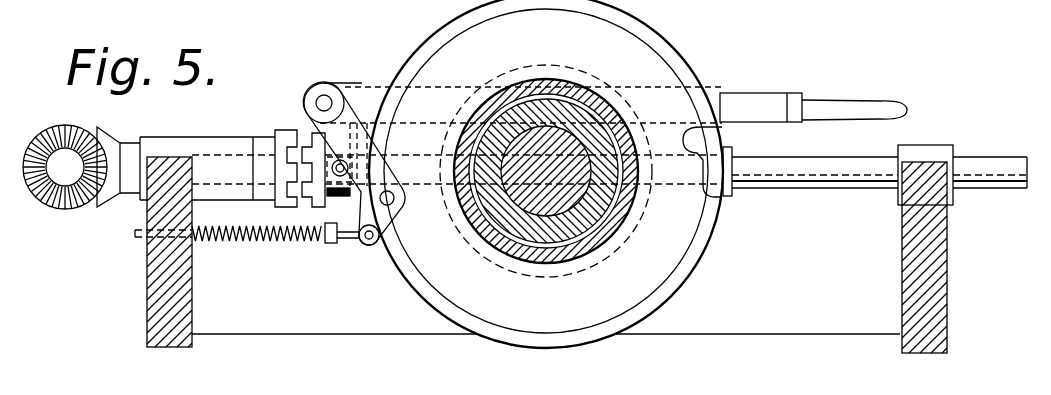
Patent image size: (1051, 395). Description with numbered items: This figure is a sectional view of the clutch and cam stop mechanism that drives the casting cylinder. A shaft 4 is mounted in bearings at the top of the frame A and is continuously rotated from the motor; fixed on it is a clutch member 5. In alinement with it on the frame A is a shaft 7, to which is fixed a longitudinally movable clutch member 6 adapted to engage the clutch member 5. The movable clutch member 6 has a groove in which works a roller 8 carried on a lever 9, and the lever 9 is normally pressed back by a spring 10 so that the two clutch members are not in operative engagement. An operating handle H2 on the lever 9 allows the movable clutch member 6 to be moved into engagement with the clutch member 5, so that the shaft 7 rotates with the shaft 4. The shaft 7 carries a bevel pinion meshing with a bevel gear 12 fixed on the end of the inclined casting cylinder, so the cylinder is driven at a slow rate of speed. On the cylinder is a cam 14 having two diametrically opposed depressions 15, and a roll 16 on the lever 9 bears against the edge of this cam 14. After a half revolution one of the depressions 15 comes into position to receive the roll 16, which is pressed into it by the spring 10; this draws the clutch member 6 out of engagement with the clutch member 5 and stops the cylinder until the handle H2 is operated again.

The shaft 4 is at (210, 152).
The clutch member 5 is at (276, 131).
The movable clutch member 6 is at (315, 207).
The shaft 7 is at (830, 160).
The roller 8 is at (360, 100).
The lever 9 is at (378, 163).
The spring 10 is at (268, 243).
The bevel gear 12 is at (707, 233).
The cam 14 is at (673, 260).
The depressions 15 is at (390, 172).
The roll 16 is at (395, 212).
The frame A is at (140, 297).
The operating handle H2 is at (752, 90).